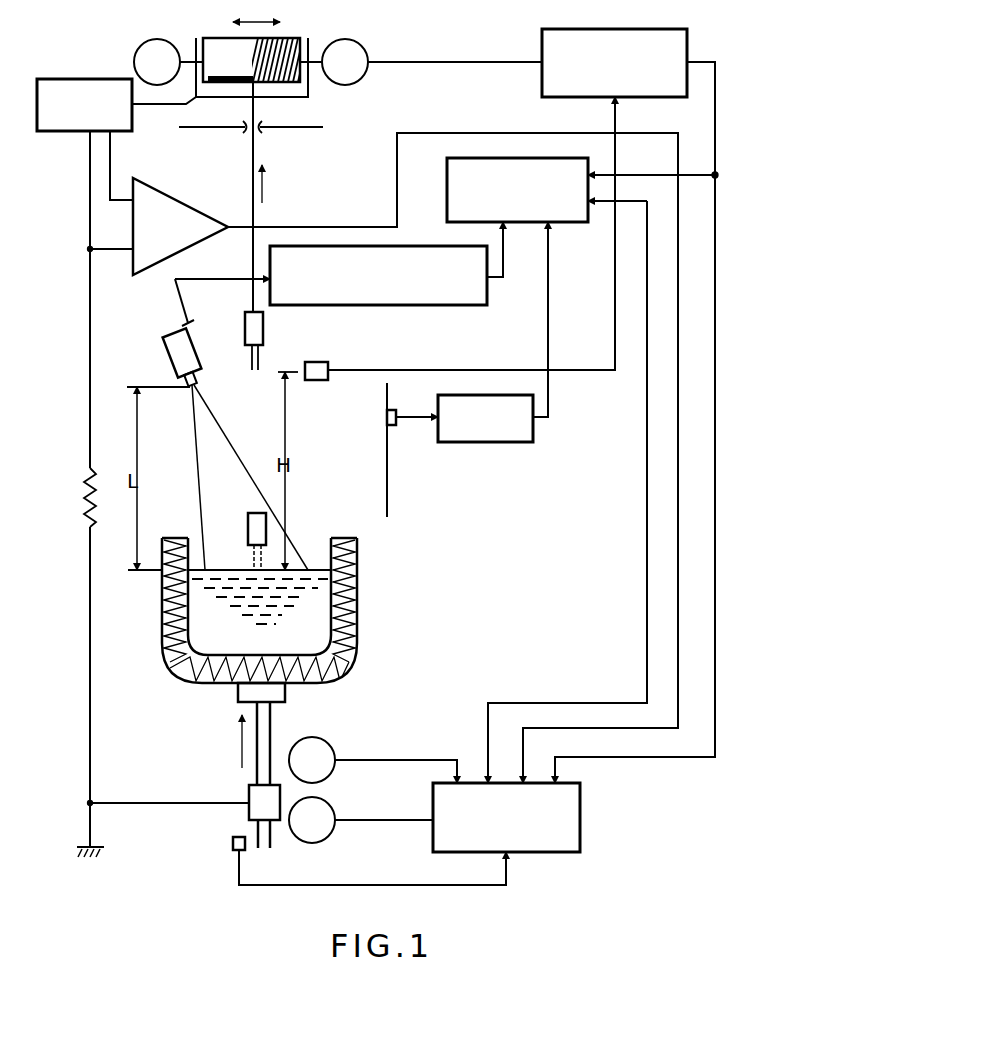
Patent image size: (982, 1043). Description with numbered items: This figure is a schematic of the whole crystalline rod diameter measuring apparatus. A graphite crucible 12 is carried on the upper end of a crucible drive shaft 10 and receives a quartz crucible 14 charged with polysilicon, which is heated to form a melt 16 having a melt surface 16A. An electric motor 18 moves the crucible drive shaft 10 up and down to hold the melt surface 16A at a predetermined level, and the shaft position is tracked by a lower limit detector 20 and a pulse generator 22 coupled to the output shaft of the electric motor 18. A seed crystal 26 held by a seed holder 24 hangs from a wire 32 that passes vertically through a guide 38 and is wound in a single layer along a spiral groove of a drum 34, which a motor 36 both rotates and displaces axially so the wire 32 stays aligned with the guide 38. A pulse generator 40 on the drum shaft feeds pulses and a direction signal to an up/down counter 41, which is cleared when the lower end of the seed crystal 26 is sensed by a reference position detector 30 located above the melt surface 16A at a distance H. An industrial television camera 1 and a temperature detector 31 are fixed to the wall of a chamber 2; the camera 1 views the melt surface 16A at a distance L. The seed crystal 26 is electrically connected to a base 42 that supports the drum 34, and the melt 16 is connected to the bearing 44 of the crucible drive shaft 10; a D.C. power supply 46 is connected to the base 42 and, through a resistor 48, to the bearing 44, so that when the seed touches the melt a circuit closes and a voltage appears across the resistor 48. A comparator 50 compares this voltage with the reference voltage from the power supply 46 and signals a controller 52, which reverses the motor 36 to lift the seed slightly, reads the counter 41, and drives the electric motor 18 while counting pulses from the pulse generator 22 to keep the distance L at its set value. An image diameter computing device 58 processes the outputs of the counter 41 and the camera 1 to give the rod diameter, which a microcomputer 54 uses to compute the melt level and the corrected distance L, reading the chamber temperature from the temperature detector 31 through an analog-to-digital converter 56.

The industrial television camera 1 is at (165, 350).
The chamber 2 is at (388, 497).
The crucible drive shaft 10 is at (272, 735).
The graphite crucible 12 is at (293, 595).
The quartz crucible 14 is at (337, 538).
The melt 16 is at (260, 567).
The melt surface 16A is at (318, 570).
The electric motor 18 is at (330, 835).
The lower limit detector 20 is at (230, 847).
The pulse generator 22 is at (333, 747).
The seed holder 24 is at (244, 325).
The seed crystal 26 is at (252, 360).
The reference position detector 30 is at (318, 362).
The temperature detector 31 is at (393, 408).
The wire 32 is at (258, 146).
The drum 34 is at (207, 38).
The motor 36 is at (150, 42).
The guide 38 is at (262, 124).
The pulse generator 40 is at (366, 48).
The counter 41 is at (625, 29).
The base 42 is at (224, 100).
The bearing 44 is at (248, 797).
The D.C. power supply 46 is at (90, 79).
The resistor 48 is at (90, 520).
The comparator 50 is at (187, 205).
The controller 52 is at (580, 815).
The microcomputer 54 is at (447, 206).
The analog-to-digital converter 56 is at (503, 442).
The image diameter computing device 58 is at (458, 305).